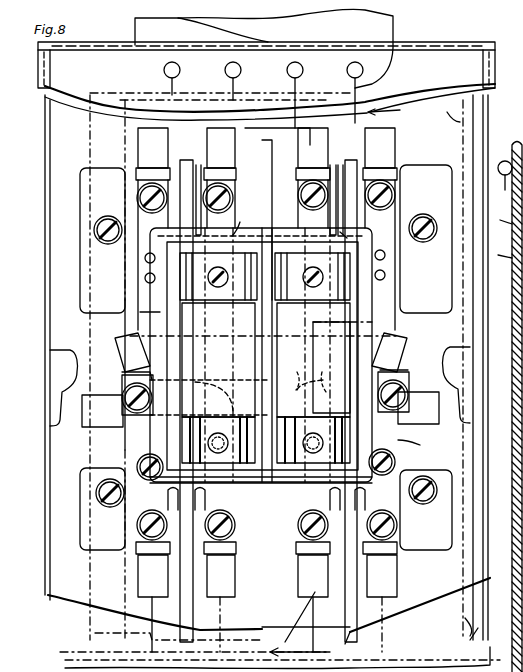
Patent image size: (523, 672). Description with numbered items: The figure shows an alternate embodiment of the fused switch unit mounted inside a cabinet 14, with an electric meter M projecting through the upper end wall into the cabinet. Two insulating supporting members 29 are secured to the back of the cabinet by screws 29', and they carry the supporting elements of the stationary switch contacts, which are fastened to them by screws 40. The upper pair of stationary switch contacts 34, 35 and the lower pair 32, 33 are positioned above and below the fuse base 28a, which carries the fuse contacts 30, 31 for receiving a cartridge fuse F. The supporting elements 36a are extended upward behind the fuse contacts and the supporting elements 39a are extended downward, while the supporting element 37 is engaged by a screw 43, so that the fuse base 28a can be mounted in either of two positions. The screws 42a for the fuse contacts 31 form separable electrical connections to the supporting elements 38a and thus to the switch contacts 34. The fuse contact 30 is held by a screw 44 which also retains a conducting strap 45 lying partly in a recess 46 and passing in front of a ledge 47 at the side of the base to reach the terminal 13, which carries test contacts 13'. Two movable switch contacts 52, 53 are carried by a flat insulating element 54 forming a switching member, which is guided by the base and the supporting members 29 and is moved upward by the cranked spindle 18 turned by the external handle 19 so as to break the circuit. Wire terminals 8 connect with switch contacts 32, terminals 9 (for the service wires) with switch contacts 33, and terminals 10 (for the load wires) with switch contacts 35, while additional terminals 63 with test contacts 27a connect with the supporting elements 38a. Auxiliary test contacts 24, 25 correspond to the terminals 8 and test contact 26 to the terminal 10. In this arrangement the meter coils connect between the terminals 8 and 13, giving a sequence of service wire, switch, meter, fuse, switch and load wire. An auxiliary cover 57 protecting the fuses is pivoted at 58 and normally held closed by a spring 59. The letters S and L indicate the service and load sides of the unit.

The meter M is at (382, 27).
The wire connecting terminal 9 is at (133, 596).
The wire connecting terminal 10 is at (160, 147).
The additional wire receiving terminal 63 is at (290, 138).
The stationary switch contact 34 is at (263, 186).
The stationary switch contact 35 is at (350, 186).
The test contact 27a is at (280, 220).
The auxiliary test contact 26 is at (136, 187).
The supporting element 38a is at (300, 215).
The supporting element 39a is at (388, 218).
The screw 29' is at (261, 370).
The movable switch contact 53 is at (352, 230).
The screw 40 is at (145, 287).
The insulating supporting member 29 is at (276, 367).
The wire connecting terminal 13 is at (260, 341).
The test contact 13' is at (265, 377).
The fuse base 28a is at (143, 313).
The fuse contact 31 is at (220, 360).
The screw 42a is at (316, 290).
The fuse F is at (300, 342).
The recess 46 is at (302, 373).
The conducting member 45 is at (322, 374).
The fuse contact 30 is at (324, 360).
The screw 44 is at (266, 447).
The supporting element 36a is at (266, 501).
The stationary switch contact 33 is at (360, 500).
The auxiliary test contact 24 is at (236, 541).
The auxiliary test contact 25 is at (142, 558).
The wire connecting terminal 8 is at (233, 581).
The stationary switch contact 32 is at (257, 401).
The movable switch contact 52 is at (361, 401).
The flat insulating element 54 is at (357, 642).
The base plate S is at (70, 652).
The conductor lead L is at (470, 630).
The cabinet 14 is at (487, 140).
The pivot 58 is at (504, 184).
The spring 59 is at (504, 225).
The operating handle 19 is at (504, 275).
The spindle 18 is at (260, 396).
The screw 43 is at (383, 450).
The ledge 47 is at (416, 438).
The supporting element 37 is at (398, 478).
The auxiliary cover 57 is at (512, 476).